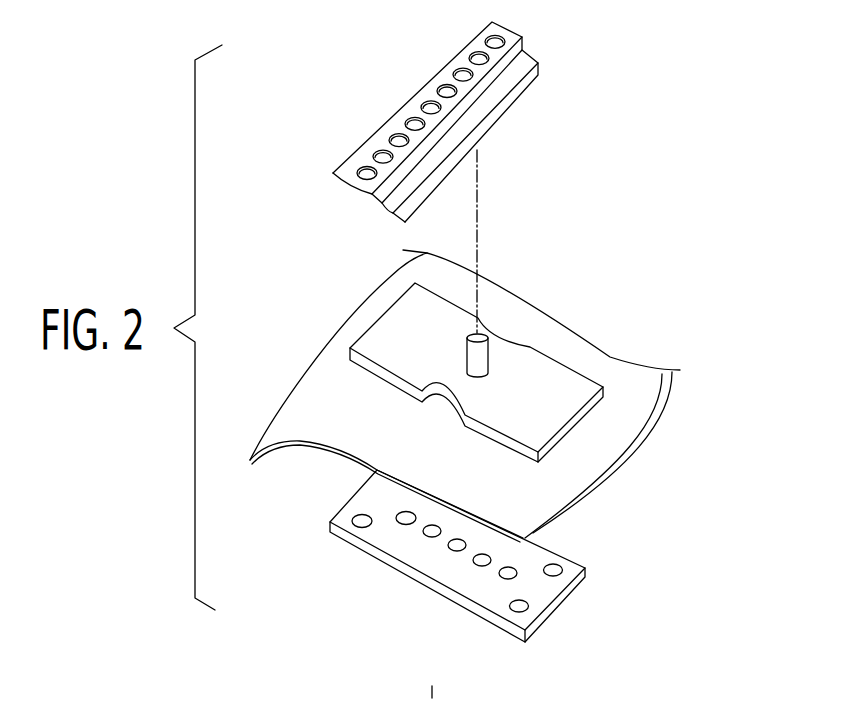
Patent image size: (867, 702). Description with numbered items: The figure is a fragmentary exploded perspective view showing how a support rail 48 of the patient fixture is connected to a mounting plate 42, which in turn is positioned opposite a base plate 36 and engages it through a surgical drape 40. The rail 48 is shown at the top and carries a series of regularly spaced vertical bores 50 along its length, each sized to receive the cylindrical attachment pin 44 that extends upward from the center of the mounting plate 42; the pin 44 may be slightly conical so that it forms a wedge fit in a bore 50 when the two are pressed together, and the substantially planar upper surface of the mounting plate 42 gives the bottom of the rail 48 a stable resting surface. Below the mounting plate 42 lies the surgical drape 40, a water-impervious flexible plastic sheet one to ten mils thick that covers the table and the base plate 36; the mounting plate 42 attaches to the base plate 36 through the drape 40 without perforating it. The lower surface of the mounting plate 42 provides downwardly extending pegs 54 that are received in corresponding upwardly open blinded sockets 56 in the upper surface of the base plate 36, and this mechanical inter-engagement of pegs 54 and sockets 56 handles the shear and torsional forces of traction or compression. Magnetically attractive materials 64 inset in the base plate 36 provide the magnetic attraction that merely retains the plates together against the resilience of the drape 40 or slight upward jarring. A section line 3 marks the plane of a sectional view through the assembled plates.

The section line 3- 3 is at (350, 301).
The base plate 36 is at (392, 563).
The surgical drape 40 is at (280, 455).
The mounting plate 42 is at (610, 362).
The cylindrical attachment pin 44 is at (490, 355).
The rail 48 is at (467, 44).
The vertical bores 50 is at (460, 70).
The pegs 54 is at (362, 383).
The sockets 56 is at (345, 527).
The magnetically attractive materials 64 is at (377, 549).